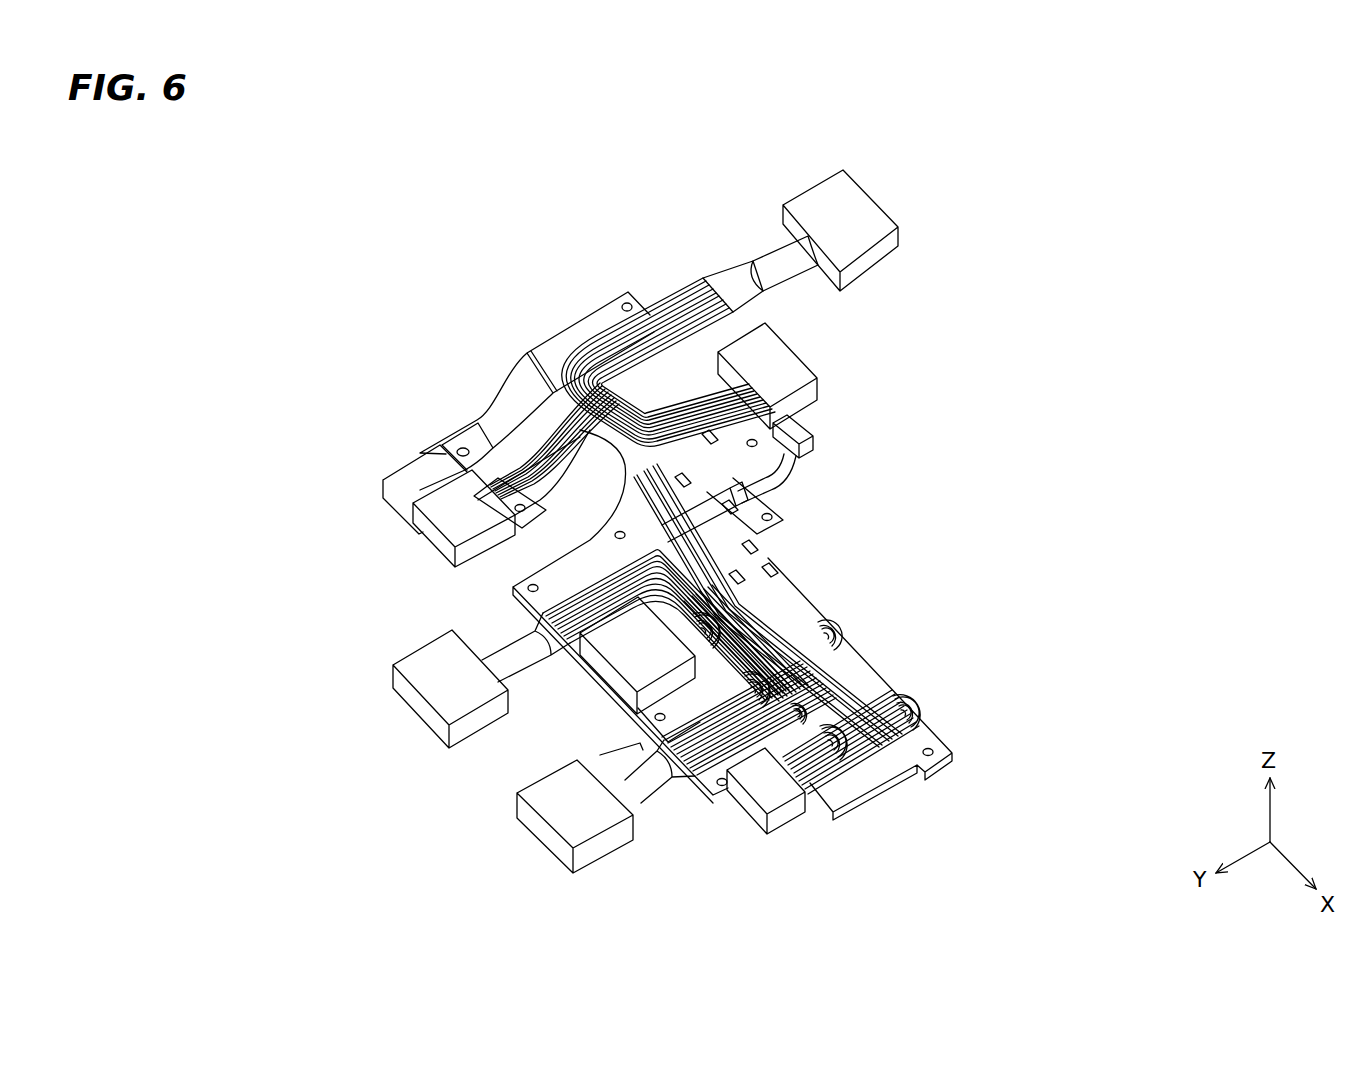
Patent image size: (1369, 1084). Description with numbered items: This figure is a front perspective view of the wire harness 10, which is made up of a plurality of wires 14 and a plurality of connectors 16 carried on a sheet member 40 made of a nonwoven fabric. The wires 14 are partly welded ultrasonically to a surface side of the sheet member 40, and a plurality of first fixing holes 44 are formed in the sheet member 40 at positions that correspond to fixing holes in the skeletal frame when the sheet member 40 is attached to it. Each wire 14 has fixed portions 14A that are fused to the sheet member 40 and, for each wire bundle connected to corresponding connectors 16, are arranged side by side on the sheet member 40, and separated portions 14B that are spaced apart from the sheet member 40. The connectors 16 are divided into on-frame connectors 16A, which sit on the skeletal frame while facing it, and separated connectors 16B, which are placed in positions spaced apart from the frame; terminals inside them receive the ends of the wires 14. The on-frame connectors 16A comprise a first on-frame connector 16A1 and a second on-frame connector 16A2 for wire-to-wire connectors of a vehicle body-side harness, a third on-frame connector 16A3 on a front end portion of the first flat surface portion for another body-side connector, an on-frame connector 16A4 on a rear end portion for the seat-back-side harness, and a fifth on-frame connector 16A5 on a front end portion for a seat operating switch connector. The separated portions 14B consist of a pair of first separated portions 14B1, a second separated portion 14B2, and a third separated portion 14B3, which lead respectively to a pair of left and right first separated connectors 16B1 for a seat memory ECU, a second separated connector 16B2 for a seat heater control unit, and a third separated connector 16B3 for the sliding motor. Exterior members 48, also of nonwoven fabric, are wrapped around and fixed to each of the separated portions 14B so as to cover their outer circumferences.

The wire harness 10 is at (503, 292).
The wires 14 is at (543, 388).
The fixed portions 14A is at (538, 440).
The separated portions 14B is at (723, 743).
The first separated portions 14B1 is at (527, 677).
The second separated portion 14B2 is at (763, 250).
The third separated portion 14B3 is at (805, 468).
The connectors 16 is at (566, 873).
The on-frame connectors 16A is at (355, 491).
The first on-frame connector 16A1 is at (398, 487).
The second on-frame connector 16A2 is at (452, 512).
The third on-frame connector 16A3 is at (657, 625).
The on-frame connector 16A4 is at (787, 345).
The fifth on-frame connector 16A5 is at (780, 790).
The separated connectors 16B is at (548, 790).
The first separated connectors 16B1 is at (445, 698).
The second separated connector 16B2 is at (848, 215).
The third separated connector 16B3 is at (792, 424).
The sheet member 40 is at (935, 710).
The first fixing holes 44 is at (622, 303).
The exterior members 48 is at (793, 270).